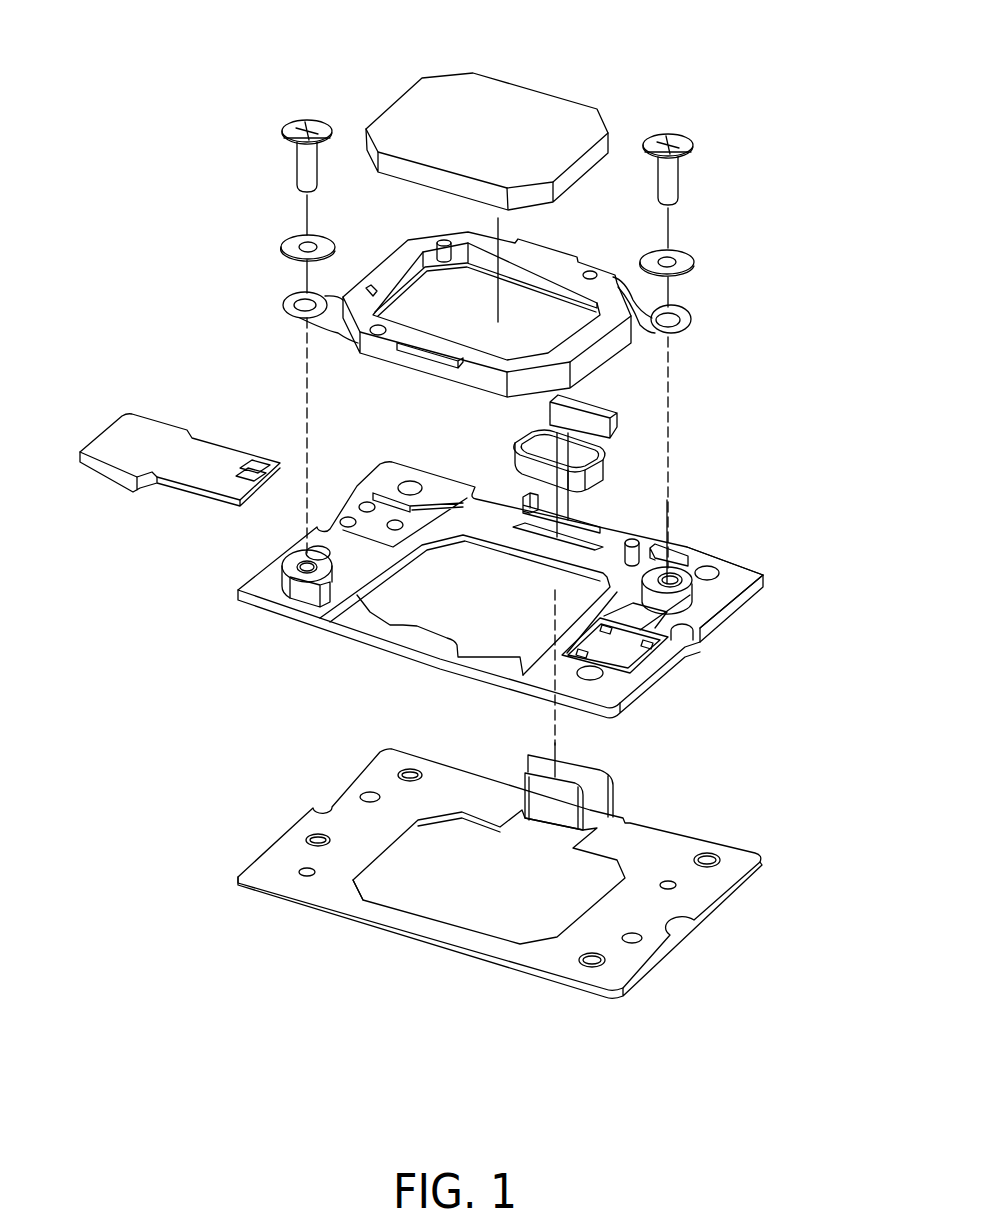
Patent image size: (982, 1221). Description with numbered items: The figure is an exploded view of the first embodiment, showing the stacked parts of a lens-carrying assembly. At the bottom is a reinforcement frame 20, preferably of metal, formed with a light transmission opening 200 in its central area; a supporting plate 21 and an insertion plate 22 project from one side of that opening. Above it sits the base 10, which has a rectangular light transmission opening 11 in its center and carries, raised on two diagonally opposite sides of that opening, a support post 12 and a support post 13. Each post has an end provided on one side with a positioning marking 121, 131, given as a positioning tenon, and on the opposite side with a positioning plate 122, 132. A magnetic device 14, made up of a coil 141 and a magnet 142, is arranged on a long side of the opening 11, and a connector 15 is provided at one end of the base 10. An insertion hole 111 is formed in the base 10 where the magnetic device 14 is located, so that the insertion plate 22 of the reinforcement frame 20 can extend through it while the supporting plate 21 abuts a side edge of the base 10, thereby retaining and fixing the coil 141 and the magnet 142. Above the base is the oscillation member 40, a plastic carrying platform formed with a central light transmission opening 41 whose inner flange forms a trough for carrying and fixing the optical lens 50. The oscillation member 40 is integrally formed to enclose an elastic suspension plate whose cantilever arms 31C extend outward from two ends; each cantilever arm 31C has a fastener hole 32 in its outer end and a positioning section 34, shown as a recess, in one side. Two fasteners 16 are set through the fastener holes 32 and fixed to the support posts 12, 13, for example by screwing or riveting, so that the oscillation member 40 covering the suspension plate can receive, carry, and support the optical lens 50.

The optical lens 50 is at (498, 113).
The fasteners 16 is at (723, 132).
The oscillation member 40 is at (505, 325).
The light transmission opening 41 is at (456, 323).
The positioning section 34 is at (655, 333).
The cantilever arm 31C is at (706, 309).
The fastener hole 32 is at (668, 316).
The magnetic device 14 is at (665, 425).
The coil 141 is at (595, 477).
The magnet 142 is at (613, 417).
The connector 15 is at (153, 438).
The base 10 is at (502, 590).
The light transmission opening 11 is at (403, 600).
The insertion hole 111 is at (592, 545).
The support post 12 is at (719, 576).
The positioning marking 121 is at (707, 620).
The positioning plate 122 is at (667, 548).
The support post 13 is at (249, 611).
The positioning marking 131 is at (310, 553).
The positioning plate 132 is at (303, 593).
The reinforcement frame 20 is at (538, 861).
The light transmission opening 200 is at (430, 892).
The supporting plate 21 is at (607, 792).
The insertion plate 22 is at (528, 775).